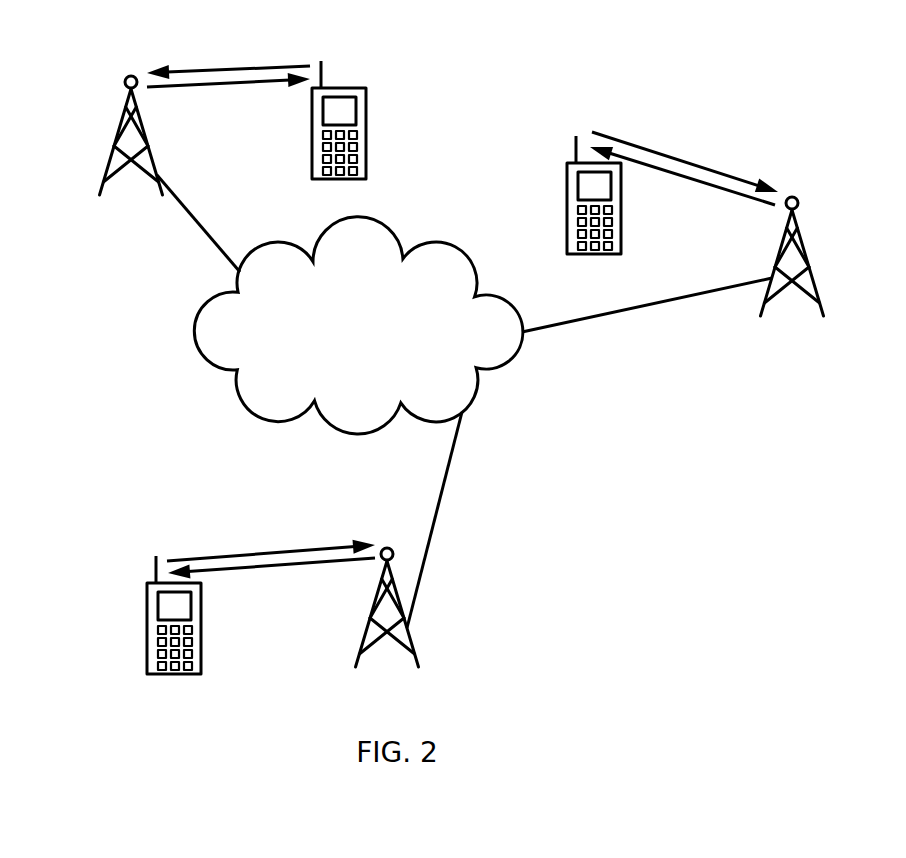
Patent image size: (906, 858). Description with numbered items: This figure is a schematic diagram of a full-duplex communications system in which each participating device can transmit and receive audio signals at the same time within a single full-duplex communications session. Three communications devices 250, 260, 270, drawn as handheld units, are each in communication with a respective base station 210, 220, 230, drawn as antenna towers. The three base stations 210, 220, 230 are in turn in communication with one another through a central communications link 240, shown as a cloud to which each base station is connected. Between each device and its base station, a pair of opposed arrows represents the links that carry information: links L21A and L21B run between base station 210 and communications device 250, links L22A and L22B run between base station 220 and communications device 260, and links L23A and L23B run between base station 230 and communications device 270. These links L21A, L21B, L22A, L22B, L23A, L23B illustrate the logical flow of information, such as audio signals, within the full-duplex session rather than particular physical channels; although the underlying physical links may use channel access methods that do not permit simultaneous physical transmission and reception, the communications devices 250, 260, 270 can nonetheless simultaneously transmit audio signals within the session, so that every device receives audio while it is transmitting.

The base station 210 is at (116, 140).
The base station 220 is at (774, 270).
The base station 230 is at (365, 636).
The communications link 240 is at (200, 330).
The communications device 250 is at (368, 118).
The communications device 260 is at (567, 197).
The communications device 270 is at (146, 617).
The link L21A is at (268, 64).
The link L21B is at (267, 86).
The link L22A is at (712, 163).
The link L22B is at (717, 195).
The link L23A is at (295, 544).
The link L23B is at (313, 571).